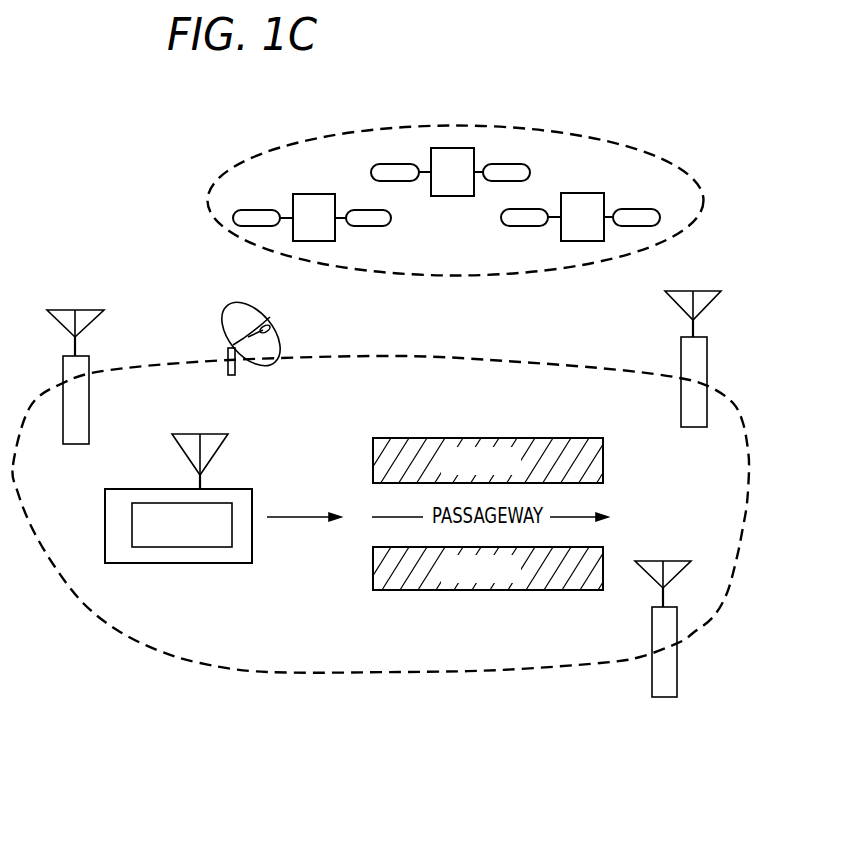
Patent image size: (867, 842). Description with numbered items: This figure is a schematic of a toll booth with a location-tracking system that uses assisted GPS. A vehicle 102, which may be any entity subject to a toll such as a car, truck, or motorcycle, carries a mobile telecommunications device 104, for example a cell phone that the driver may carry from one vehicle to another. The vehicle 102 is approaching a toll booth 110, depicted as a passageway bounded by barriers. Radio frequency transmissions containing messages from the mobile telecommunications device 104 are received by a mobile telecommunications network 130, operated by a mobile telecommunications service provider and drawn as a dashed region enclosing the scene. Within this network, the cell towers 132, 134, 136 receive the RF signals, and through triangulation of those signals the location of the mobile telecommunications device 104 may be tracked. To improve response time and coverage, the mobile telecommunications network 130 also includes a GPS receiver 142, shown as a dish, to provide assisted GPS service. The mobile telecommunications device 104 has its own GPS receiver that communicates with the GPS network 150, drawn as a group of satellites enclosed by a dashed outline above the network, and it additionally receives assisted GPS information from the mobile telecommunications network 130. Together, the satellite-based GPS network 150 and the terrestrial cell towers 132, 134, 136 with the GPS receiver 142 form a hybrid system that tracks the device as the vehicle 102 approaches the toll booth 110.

The GPS network 150 is at (383, 126).
The mobile telecommunications network 130 is at (523, 358).
The cell tower 132 is at (83, 313).
The cell tower 134 is at (707, 292).
The cell tower 136 is at (672, 560).
The GPS receiver 142 is at (228, 305).
The vehicle 102 is at (178, 497).
The mobile telecommunications device 104 is at (182, 525).
The toll booth 110 is at (477, 600).